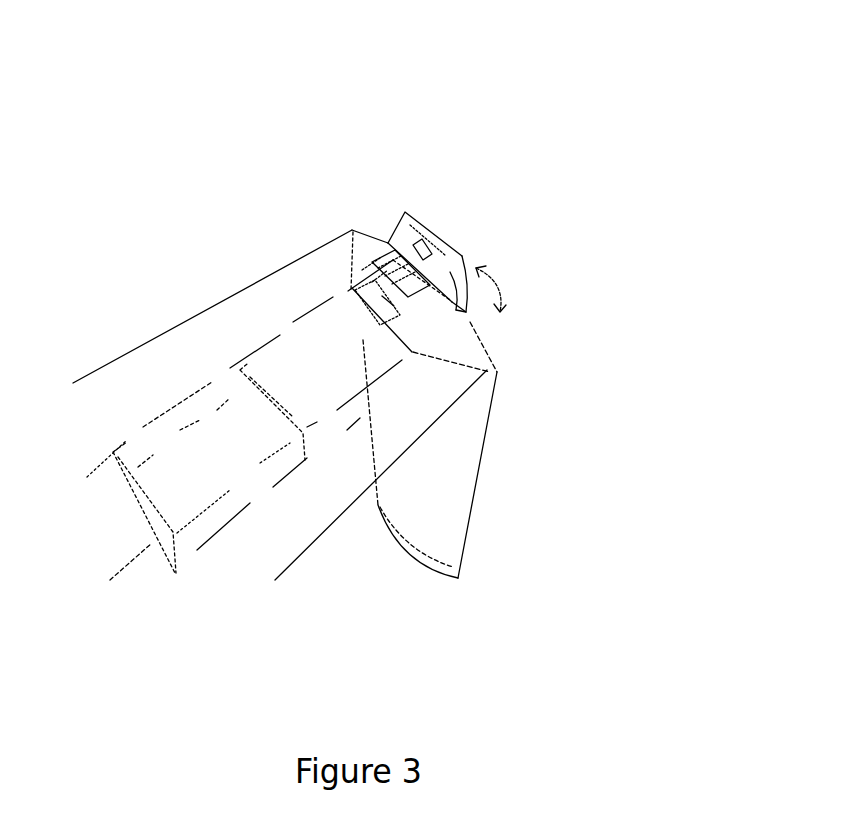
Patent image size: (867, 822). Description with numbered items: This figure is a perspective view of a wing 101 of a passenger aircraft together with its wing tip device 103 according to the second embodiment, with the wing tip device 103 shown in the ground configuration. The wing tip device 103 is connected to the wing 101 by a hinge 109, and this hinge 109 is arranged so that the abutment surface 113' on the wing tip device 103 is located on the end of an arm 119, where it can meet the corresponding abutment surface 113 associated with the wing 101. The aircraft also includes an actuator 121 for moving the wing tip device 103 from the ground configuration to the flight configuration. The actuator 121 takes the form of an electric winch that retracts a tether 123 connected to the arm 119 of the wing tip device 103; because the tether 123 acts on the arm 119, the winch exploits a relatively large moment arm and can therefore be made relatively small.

The wing 101 is at (163, 290).
The wing tip device 103 is at (492, 453).
The hinge 109 is at (378, 203).
The abutment surface 113 is at (295, 230).
The abutment surface 113' is at (443, 202).
The arm 119 is at (457, 289).
The actuator 121 is at (387, 302).
The tether 123 is at (393, 277).